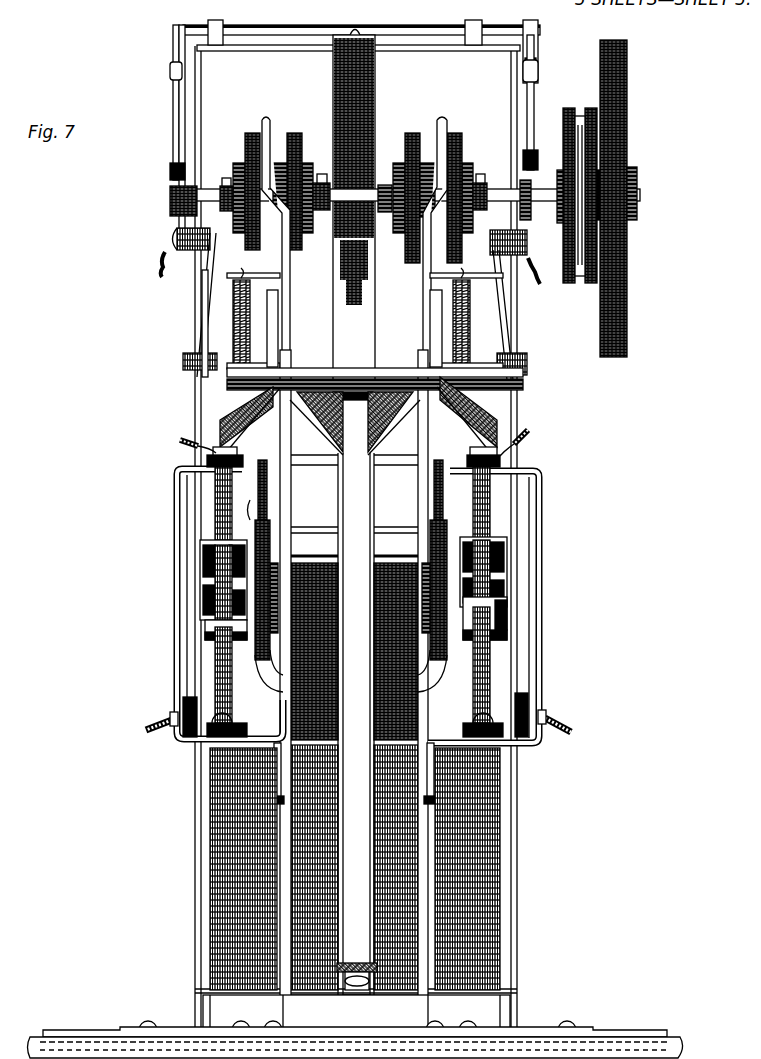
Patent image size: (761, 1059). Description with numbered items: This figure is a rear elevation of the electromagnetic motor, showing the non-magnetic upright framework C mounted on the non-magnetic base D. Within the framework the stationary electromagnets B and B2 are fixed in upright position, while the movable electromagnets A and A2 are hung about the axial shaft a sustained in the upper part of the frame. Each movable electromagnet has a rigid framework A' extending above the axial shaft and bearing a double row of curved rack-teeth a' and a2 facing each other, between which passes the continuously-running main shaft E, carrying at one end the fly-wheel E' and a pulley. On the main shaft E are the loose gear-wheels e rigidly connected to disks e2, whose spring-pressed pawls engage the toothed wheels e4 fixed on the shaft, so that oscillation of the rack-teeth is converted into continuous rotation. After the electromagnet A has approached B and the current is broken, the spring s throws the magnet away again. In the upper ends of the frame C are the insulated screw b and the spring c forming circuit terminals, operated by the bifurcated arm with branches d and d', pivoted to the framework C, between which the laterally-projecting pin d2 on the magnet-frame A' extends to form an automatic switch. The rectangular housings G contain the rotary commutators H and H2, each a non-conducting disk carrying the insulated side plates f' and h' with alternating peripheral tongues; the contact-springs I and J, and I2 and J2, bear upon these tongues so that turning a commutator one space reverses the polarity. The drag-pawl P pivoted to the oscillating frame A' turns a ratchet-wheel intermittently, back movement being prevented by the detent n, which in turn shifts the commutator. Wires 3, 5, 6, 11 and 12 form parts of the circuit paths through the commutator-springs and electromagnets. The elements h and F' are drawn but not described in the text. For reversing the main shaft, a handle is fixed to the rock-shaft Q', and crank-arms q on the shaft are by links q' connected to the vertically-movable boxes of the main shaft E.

The non-magnetic upright framework C is at (194, 828).
The rock-shaft Q' is at (361, 26).
The axial shaft a is at (542, 51).
The crank-arms q is at (167, 128).
The links q' is at (345, 102).
The movable electromagnet A is at (354, 387).
The movable electromagnet A2 is at (354, 817).
The stationary electromagnet B is at (338, 845).
The stationary electromagnet B2 is at (376, 905).
The main shaft E is at (405, 174).
The toothed wheels e4 is at (308, 165).
The disks e2 is at (460, 128).
The loose gear-wheels e is at (280, 165).
The curved rack-teeth a2 is at (362, 220).
The fly-wheel E' is at (604, 198).
The insulated screw b is at (175, 236).
The spring c is at (190, 250).
The bifurcated arm branch d is at (188, 305).
The laterally-projecting pin d2 is at (209, 300).
The bifurcated arm branch d' is at (520, 315).
The spring s is at (234, 323).
The rigid framework A' is at (354, 645).
The drag-pawl P is at (270, 435).
The curved rack-teeth a' is at (355, 424).
The rectangular housing G is at (177, 606).
The contact-spring I is at (213, 510).
The commutator-spring I2 is at (490, 516).
The rotary commutator H is at (203, 560).
The left-hand commutator H2 is at (507, 560).
The side plate f' is at (310, 579).
The bracket h is at (512, 618).
The side plate h' is at (260, 561).
The detent n is at (272, 548).
The contact-spring J is at (213, 684).
The commutator-spring J2 is at (490, 690).
The wire 11 is at (180, 441).
The wire 3 is at (530, 432).
The wire 12 is at (146, 732).
The wire 6 is at (571, 733).
The wire 5 is at (354, 764).
The lower casing F' is at (355, 869).
The non-magnetic base D is at (127, 1030).